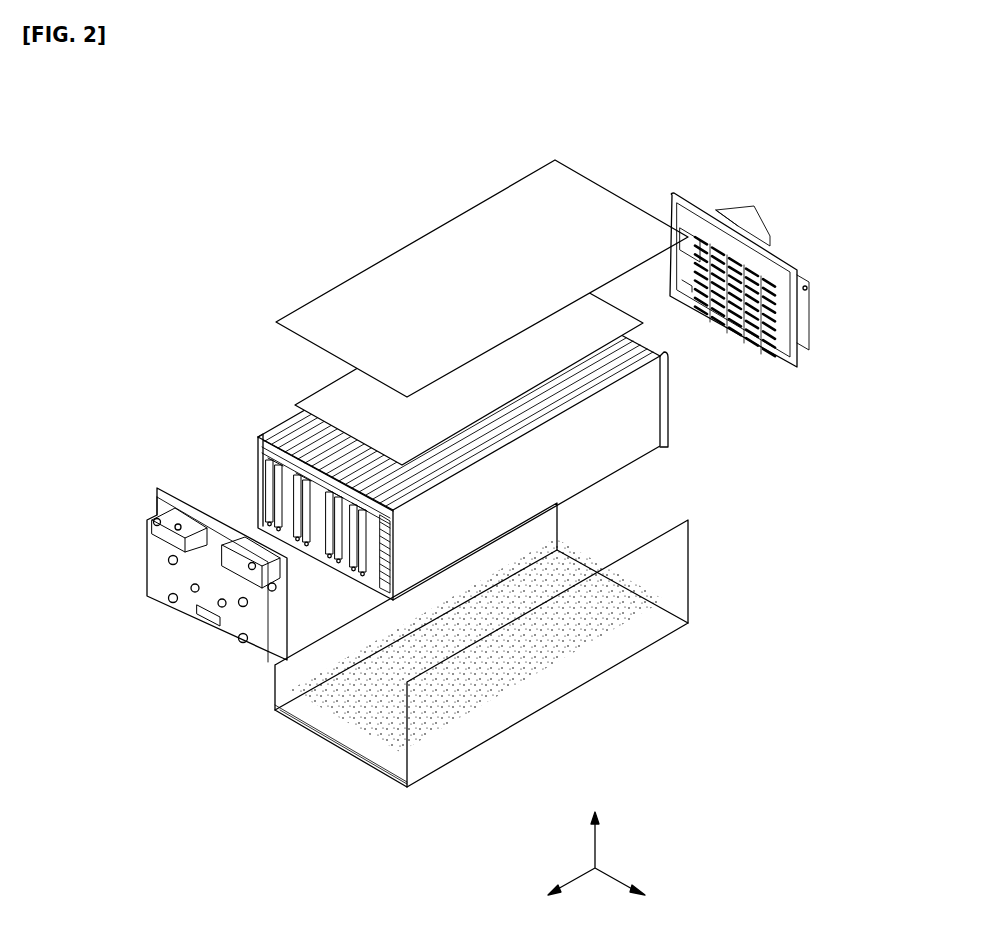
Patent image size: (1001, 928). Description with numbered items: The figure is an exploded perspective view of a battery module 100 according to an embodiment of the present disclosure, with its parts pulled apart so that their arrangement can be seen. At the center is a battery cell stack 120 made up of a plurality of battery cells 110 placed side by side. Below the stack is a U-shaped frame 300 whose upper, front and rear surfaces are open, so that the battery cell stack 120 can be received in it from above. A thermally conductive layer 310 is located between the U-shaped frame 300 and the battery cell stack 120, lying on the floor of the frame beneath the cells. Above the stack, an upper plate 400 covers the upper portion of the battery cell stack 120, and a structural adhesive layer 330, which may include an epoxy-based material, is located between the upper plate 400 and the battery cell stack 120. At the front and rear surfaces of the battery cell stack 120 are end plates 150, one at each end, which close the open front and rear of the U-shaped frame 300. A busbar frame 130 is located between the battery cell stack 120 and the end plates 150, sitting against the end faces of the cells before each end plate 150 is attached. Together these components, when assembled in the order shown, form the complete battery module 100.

The battery module 100 is at (234, 155).
The battery cell 110 is at (620, 441).
The battery cell stack 120 is at (290, 433).
The busbar frame 130 is at (246, 481).
The end plate 150 is at (690, 197).
The U-shaped frame 300 is at (577, 660).
The thermally conductive layer 310 is at (370, 709).
The structural adhesive layer 330 is at (313, 389).
The upper plate 400 is at (428, 268).